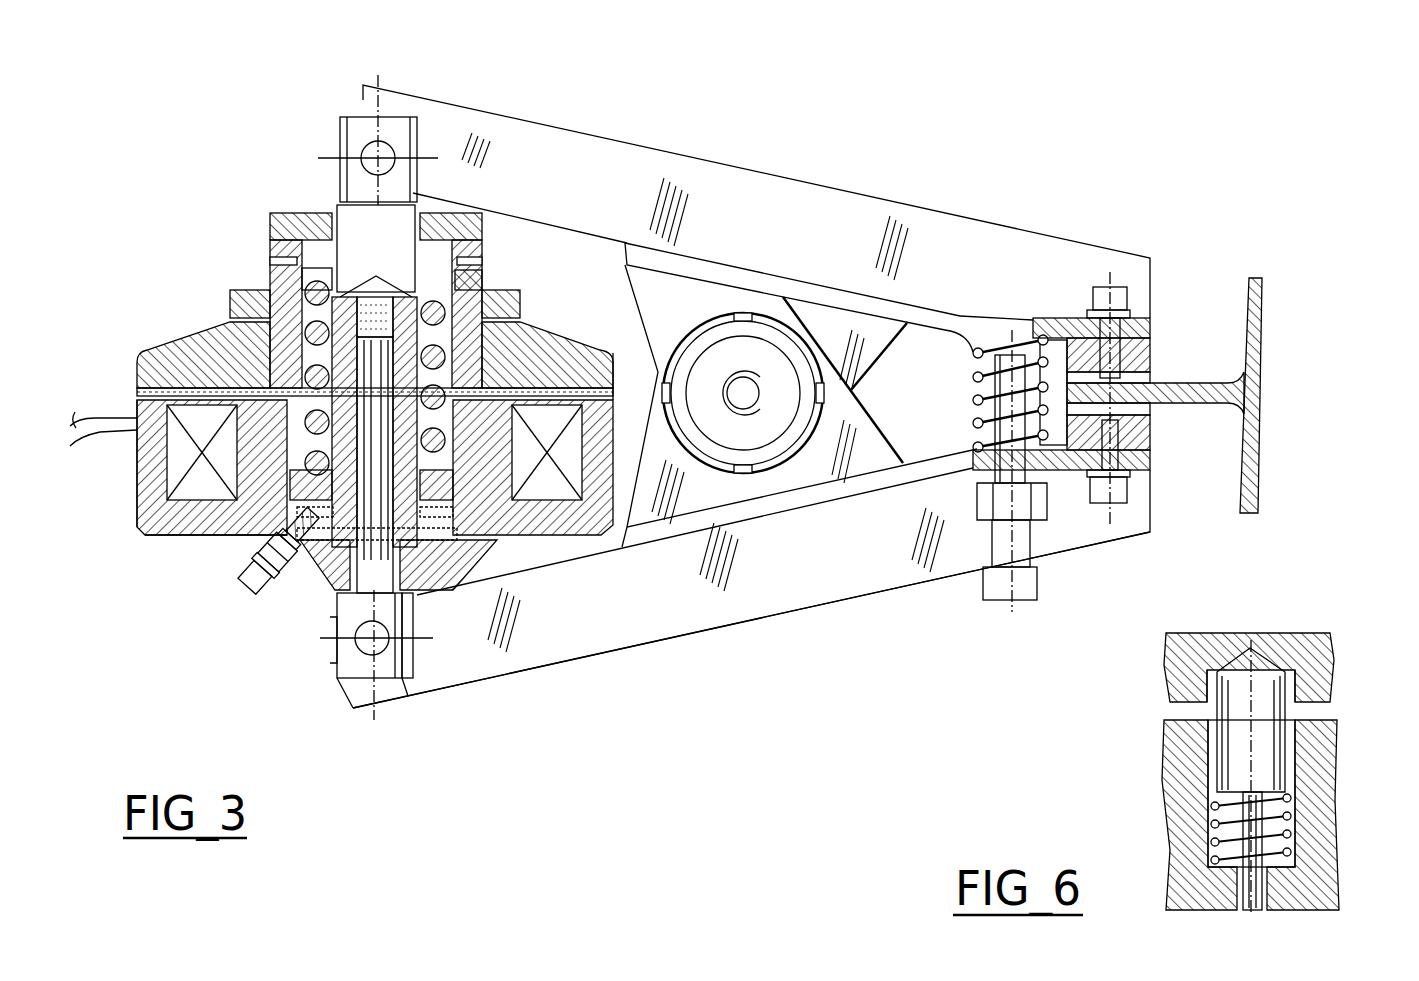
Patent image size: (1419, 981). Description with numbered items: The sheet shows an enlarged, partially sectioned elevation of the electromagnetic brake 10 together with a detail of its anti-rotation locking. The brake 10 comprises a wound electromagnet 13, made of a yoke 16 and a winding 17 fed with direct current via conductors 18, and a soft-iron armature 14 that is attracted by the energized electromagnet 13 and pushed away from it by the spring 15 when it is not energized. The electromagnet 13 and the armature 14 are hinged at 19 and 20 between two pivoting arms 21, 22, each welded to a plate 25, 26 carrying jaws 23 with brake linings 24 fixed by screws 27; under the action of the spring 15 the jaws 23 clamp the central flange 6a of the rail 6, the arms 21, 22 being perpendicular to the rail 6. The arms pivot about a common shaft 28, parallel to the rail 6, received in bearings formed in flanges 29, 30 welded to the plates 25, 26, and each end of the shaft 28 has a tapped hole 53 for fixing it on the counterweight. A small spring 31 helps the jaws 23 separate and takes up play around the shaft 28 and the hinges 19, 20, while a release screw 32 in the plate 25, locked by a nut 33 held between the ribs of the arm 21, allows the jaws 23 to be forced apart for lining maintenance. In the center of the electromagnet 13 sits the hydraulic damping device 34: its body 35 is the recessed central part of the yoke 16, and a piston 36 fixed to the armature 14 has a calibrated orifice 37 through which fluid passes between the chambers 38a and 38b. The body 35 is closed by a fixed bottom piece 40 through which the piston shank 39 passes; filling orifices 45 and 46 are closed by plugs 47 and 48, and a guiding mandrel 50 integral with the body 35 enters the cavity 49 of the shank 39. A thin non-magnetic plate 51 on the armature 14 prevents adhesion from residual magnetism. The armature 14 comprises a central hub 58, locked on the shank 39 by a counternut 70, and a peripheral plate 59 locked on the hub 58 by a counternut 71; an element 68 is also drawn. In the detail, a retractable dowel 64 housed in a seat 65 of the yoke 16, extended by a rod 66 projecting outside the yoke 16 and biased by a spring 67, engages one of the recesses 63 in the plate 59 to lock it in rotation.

In FIG. 3, the rail 6 is at (1253, 350).
In FIG. 3, the central flange 6a is at (1152, 395).
In FIG. 3, the electromagnetic brake 10 is at (253, 168).
In FIG. 3, the electromagnet 13 is at (128, 533).
In FIG. 3, the armature 14 is at (198, 330).
In FIG. 3, the spring 15 is at (233, 420).
In FIG. 3, the yoke 16 is at (143, 445).
In FIG. 6, the yoke 16 is at (1315, 830).
In FIG. 3, the winding 17 is at (180, 457).
In FIG. 3, the conductors 18 is at (125, 418).
In FIG. 3, the hinging point 19 is at (345, 660).
In FIG. 3, the hinging point 20 is at (372, 150).
In FIG. 3, the pivoting arm 21 is at (664, 618).
In FIG. 3, the pivoting arm 22 is at (722, 152).
In FIG. 3, the jaws 23 is at (1152, 320).
In FIG. 3, the brake lining 24 is at (1152, 355).
In FIG. 3, the plate 25 is at (755, 510).
In FIG. 3, the plate 26 is at (766, 276).
In FIG. 3, the screws 27 is at (1118, 285).
In FIG. 3, the shaft 28 is at (722, 355).
In FIG. 3, the flange 29 is at (870, 438).
In FIG. 3, the flange 30 is at (848, 333).
In FIG. 3, the small spring 31 is at (975, 352).
In FIG. 3, the release screw 32 is at (1015, 593).
In FIG. 3, the nut 33 is at (977, 515).
In FIG. 3, the damping device 34 is at (542, 337).
In FIG. 3, the body 35 is at (453, 593).
In FIG. 3, the piston 36 is at (332, 590).
In FIG. 3, the calibrated orifice 37 is at (415, 563).
In FIG. 3, the chamber 38a is at (452, 585).
In FIG. 3, the chamber 38b is at (500, 542).
In FIG. 3, the shank 39 is at (357, 238).
In FIG. 3, the bottom piece 40 is at (300, 450).
In FIG. 3, the orifice 45 is at (308, 578).
In FIG. 3, the orifice 46 is at (307, 463).
In FIG. 3, the plug 47 is at (287, 578).
In FIG. 3, the plug 48 is at (258, 553).
In FIG. 3, the cavity 49 is at (272, 306).
In FIG. 3, the guiding mandrel 50 is at (418, 597).
In FIG. 3, the thin plate 51 is at (135, 386).
In FIG. 3, the tapped hole 53 is at (740, 400).
In FIG. 3, the central hub 58 is at (278, 258).
In FIG. 3, the peripheral plate 59 is at (156, 347).
In FIG. 6, the peripheral plate 59 is at (1318, 678).
In FIG. 6, the recesses 63 is at (1207, 690).
In FIG. 6, the retractable dowel 64 is at (1270, 738).
In FIG. 6, the seat 65 is at (1292, 818).
In FIG. 6, the rod 66 is at (1255, 892).
In FIG. 6, the spring 67 is at (1218, 830).
In FIG. 3, the collar 68 is at (272, 245).
In FIG. 3, the counternut 70 is at (482, 217).
In FIG. 3, the counternut 71 is at (507, 292).